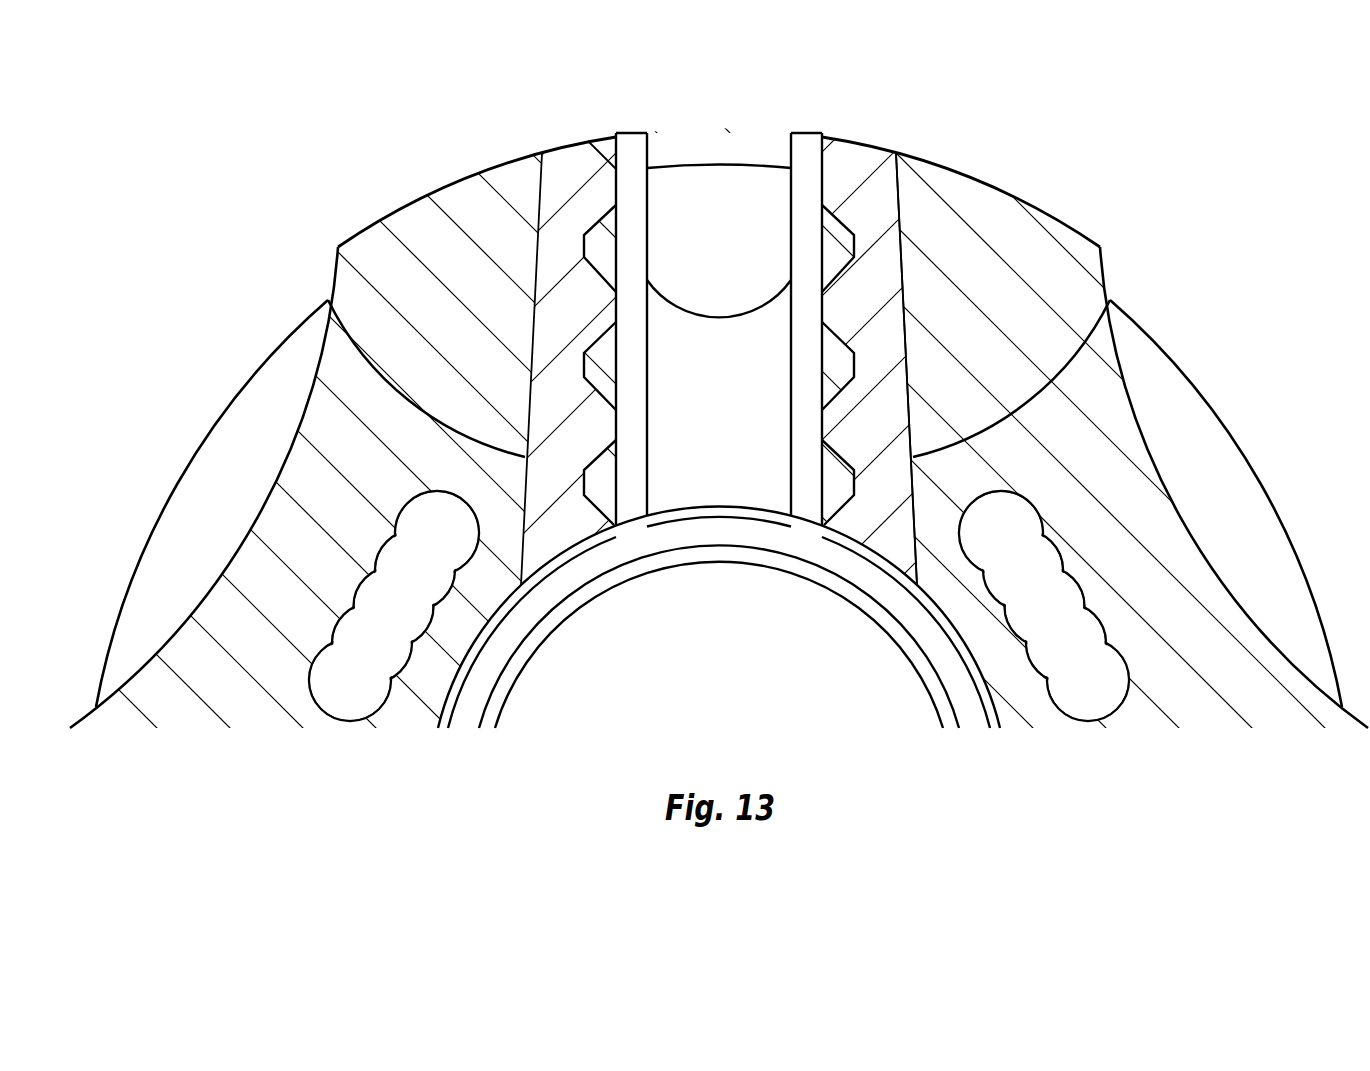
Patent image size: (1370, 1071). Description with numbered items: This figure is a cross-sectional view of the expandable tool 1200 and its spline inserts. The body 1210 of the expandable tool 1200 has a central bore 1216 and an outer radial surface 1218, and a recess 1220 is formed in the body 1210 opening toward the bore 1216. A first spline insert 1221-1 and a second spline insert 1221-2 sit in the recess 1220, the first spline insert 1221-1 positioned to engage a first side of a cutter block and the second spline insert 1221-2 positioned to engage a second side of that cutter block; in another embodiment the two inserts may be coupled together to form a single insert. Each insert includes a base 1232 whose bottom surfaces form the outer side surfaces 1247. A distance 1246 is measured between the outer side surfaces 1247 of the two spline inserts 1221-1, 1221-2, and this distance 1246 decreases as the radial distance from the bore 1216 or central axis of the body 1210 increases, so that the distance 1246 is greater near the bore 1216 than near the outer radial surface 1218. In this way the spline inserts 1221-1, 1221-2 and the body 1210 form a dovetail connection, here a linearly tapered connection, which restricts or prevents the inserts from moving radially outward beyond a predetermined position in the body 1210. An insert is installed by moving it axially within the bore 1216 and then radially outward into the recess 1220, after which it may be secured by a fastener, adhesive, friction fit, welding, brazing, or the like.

The expandable tool 1200 is at (306, 134).
The body 1210 is at (487, 323).
The bore 1216 is at (746, 653).
The outer radial surface 1218 is at (1083, 237).
The recess 1220 is at (746, 377).
The first spline insert 1221-1 is at (562, 157).
The second spline insert 1221-2 is at (875, 160).
The base 1232 is at (893, 198).
The distance 1246 is at (915, 484).
The outer side surfaces 1247 is at (328, 300).